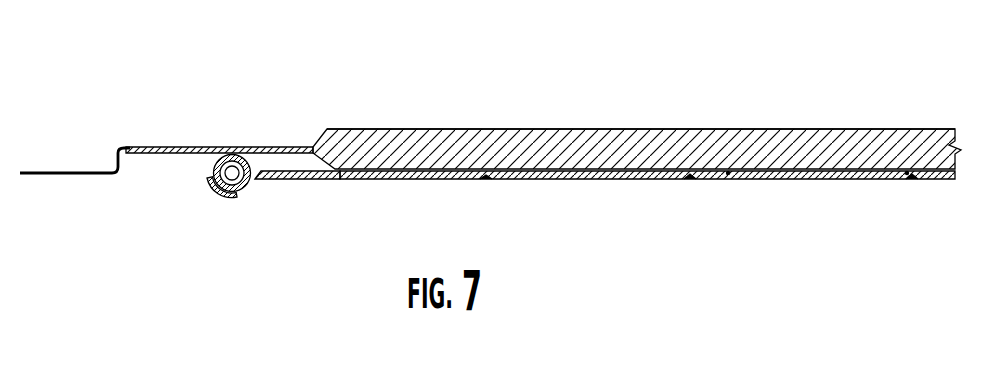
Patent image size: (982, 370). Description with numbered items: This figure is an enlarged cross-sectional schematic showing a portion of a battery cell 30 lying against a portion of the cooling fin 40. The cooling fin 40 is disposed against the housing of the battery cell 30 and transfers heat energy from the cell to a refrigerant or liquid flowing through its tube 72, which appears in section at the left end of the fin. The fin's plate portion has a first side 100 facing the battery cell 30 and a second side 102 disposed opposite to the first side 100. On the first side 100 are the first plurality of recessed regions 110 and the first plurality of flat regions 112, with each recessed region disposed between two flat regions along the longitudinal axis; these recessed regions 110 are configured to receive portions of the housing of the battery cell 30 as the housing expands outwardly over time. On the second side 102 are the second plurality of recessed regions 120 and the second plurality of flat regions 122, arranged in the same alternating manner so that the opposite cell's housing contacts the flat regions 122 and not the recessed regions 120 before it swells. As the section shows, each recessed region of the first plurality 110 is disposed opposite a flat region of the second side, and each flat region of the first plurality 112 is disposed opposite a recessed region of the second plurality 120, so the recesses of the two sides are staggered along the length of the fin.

The battery cell 30 is at (362, 131).
The first plurality of flat regions 112 is at (463, 169).
The first plurality of recessed regions 110 is at (728, 172).
The first side 100 is at (278, 172).
The second side 102 is at (280, 180).
The second plurality of recessed regions 120 is at (480, 180).
The second plurality of flat regions 122 is at (687, 180).
The tube 72 is at (218, 163).
The cooling fin 40 is at (237, 201).